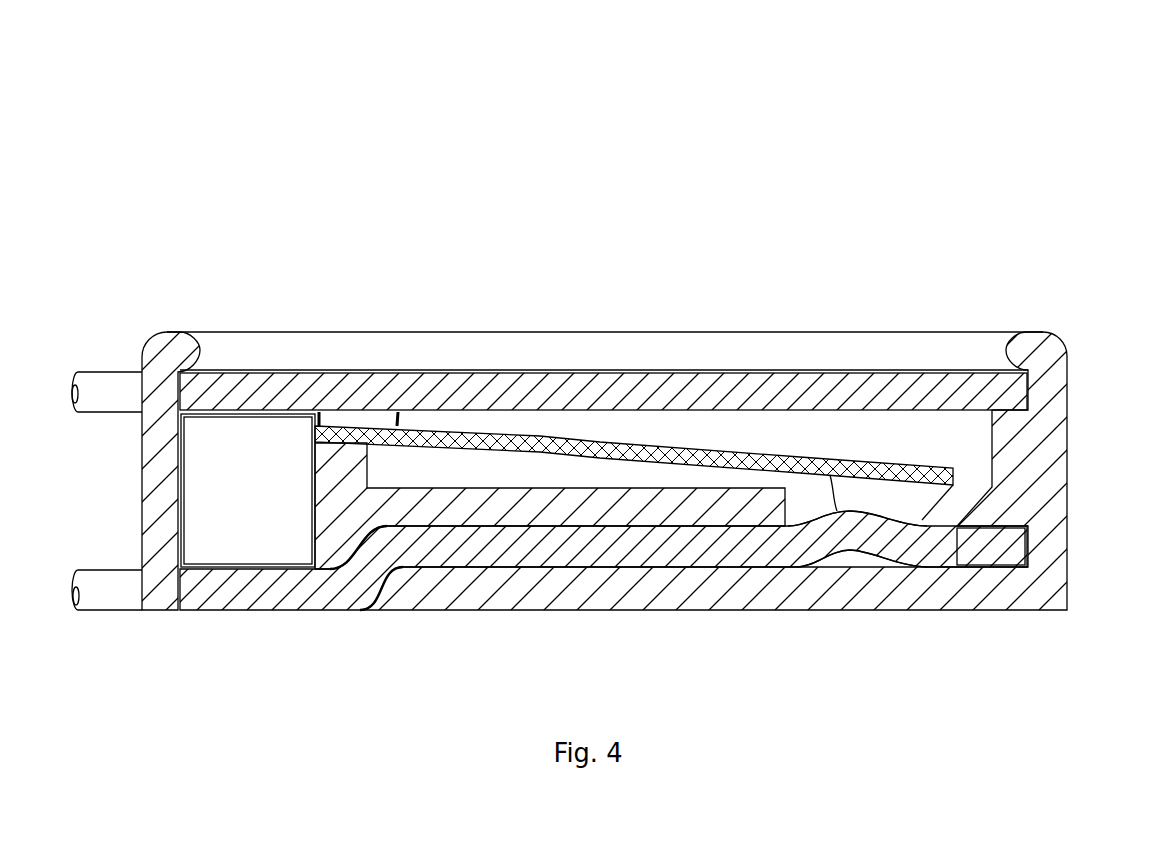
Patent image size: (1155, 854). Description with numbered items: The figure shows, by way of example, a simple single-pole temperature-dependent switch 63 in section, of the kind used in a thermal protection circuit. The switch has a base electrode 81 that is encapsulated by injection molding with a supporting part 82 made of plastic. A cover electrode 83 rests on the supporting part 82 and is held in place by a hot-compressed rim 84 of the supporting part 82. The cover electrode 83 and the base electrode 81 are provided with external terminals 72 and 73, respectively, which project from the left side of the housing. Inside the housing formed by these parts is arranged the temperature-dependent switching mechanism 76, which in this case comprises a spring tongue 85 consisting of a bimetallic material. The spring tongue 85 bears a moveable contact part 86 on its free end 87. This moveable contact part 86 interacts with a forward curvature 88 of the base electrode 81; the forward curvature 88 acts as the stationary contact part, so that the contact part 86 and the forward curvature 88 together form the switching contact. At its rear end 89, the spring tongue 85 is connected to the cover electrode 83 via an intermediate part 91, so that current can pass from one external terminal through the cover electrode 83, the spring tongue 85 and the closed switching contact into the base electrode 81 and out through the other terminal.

The temperature-dependent switch 63 is at (792, 198).
The external terminal 72 is at (105, 388).
The external terminal 73 is at (107, 597).
The temperature-dependent switching mechanism 76 is at (791, 436).
The base electrode 81 is at (343, 587).
The supporting part 82 is at (1030, 487).
The cover electrode 83 is at (275, 388).
The hot-compressed rim 84 is at (1047, 332).
The spring tongue 85 is at (613, 457).
The moveable contact part 86 is at (898, 502).
The free end 87 is at (897, 463).
The forward curvature 88 is at (880, 528).
The rear end 89 is at (358, 435).
The intermediate part 91 is at (333, 420).